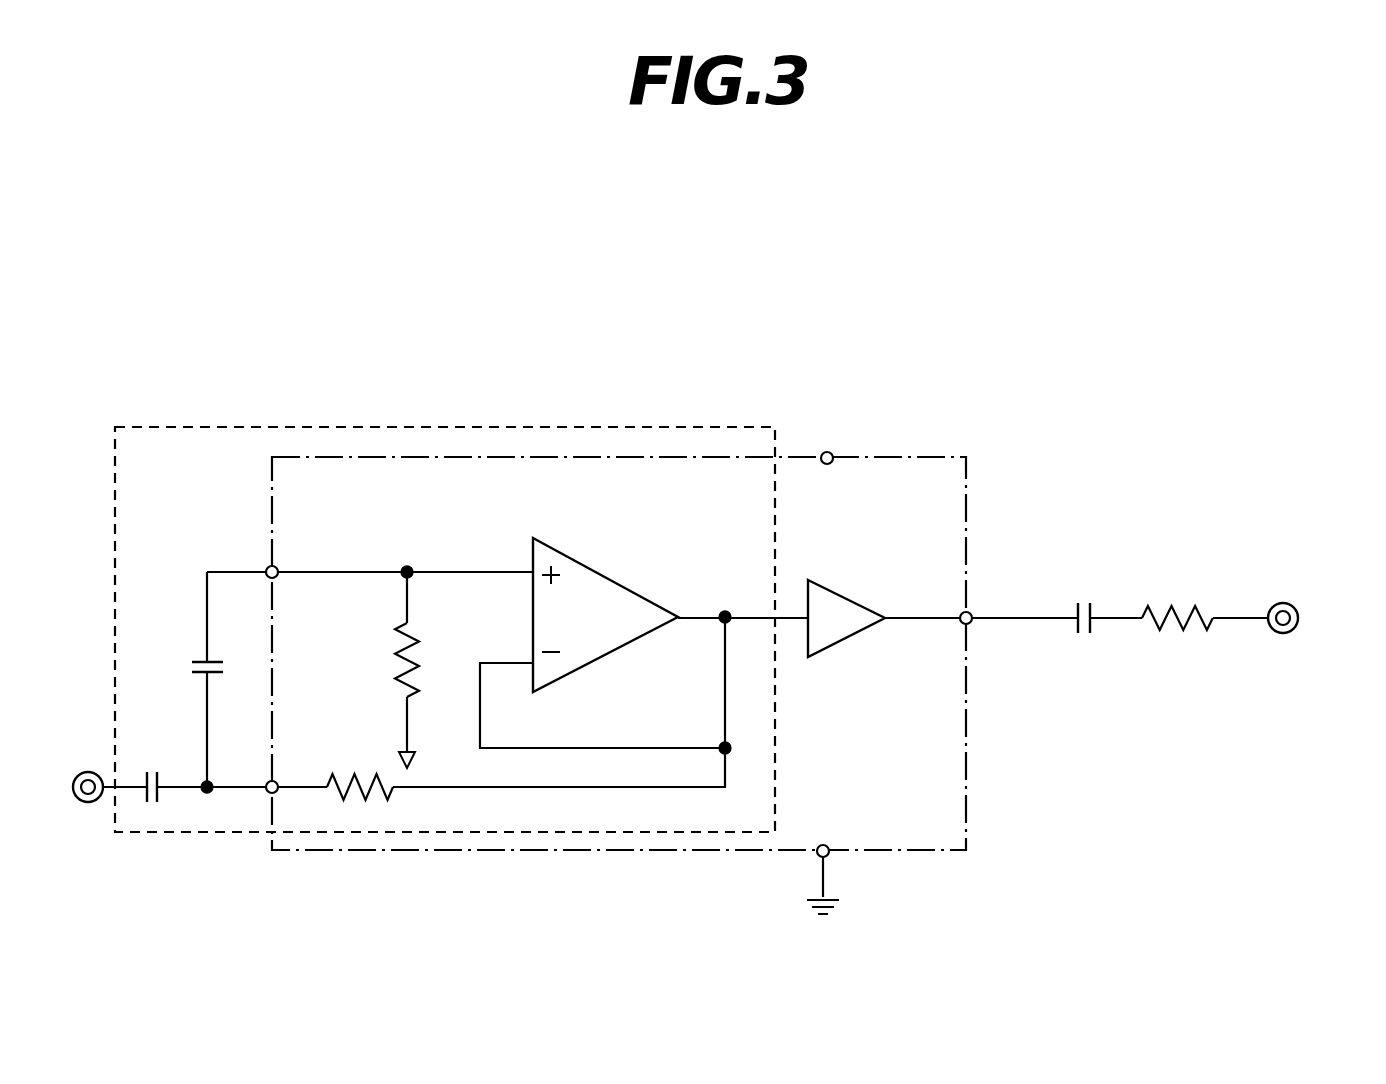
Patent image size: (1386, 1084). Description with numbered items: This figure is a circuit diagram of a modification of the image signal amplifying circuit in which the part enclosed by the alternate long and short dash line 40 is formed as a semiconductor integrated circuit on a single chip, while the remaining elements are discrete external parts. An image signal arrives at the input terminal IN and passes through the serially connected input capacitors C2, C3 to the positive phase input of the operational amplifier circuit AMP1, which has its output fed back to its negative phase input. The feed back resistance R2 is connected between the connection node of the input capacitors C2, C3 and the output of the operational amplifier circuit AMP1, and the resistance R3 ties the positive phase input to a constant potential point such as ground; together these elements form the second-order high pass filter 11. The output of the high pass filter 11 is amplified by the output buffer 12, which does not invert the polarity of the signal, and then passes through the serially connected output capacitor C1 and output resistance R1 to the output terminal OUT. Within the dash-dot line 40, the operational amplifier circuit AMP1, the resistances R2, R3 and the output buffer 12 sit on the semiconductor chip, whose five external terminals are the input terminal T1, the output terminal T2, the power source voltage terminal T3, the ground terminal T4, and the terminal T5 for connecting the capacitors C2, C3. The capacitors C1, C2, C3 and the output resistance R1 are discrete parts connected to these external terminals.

The second-order high pass filter 11 is at (473, 427).
The alternate long and short dash line 40 is at (966, 472).
The output buffer 12 is at (845, 598).
The operational amplifier circuit AMP1 is at (605, 577).
The input terminal T1 is at (267, 567).
The output terminal T2 is at (969, 612).
The power source voltage terminal T3 is at (830, 452).
The ground terminal T4 is at (818, 858).
The terminal for connecting the capacitors C2 and C3 T5 is at (267, 793).
The input terminal IN is at (78, 773).
The output terminal OUT is at (1290, 604).
The output capacitor C1 is at (1085, 646).
The input capacitor C2 is at (154, 770).
The input capacitor C3 is at (187, 670).
The output resistance R1 is at (1177, 648).
The feed back resistance R2 is at (357, 769).
The resistance R3 is at (432, 695).